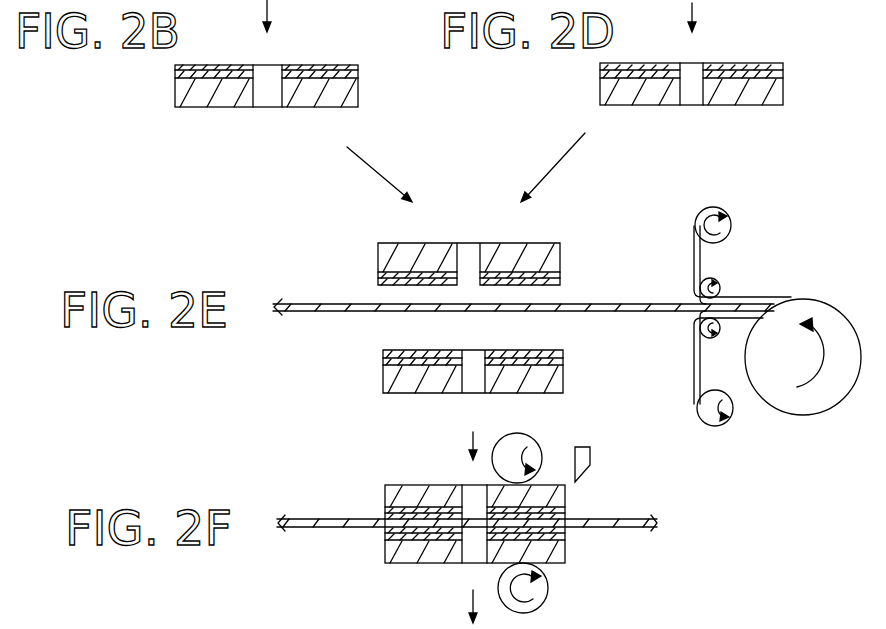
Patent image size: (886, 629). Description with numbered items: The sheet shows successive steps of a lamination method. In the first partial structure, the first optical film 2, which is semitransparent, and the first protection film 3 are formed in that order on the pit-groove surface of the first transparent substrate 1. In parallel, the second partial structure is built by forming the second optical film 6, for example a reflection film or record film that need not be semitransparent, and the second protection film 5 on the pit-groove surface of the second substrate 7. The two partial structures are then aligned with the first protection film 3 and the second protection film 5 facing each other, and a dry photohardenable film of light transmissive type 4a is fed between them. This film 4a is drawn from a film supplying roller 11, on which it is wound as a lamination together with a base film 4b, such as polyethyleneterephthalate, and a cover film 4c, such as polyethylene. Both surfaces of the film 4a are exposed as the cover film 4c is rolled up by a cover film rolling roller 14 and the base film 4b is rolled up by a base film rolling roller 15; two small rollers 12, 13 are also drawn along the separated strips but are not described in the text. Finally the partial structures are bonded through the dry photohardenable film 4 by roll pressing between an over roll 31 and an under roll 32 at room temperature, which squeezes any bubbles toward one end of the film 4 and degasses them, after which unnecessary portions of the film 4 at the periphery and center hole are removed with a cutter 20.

In FIG. 2E, the first transparent substrate 1 is at (384, 376).
In FIG. 2B, the first optical film 2 is at (358, 75).
In FIG. 2E, the first optical film 2 is at (384, 362).
In FIG. 2B, the first protection film 3 is at (358, 69).
In FIG. 2E, the first protection film 3 is at (384, 355).
In FIG. 2F, the dry photohardenable film 4 is at (308, 519).
In FIG. 2E, the dry photohardenable film of light transmissive type 4a is at (291, 302).
In FIG. 2E, the base film 4b is at (693, 371).
In FIG. 2E, the cover film 4c is at (693, 255).
In FIG. 2D, the second protection film 5 is at (783, 69).
In FIG. 2E, the second protection film 5 is at (379, 282).
In FIG. 2D, the second optical film 6 is at (783, 73).
In FIG. 2E, the second optical film 6 is at (379, 272).
In FIG. 2E, the second substrate 7 is at (379, 256).
In FIG. 2E, the film supplying roller 11 is at (810, 310).
In FIG. 2E, the guide roller 12 is at (720, 286).
In FIG. 2E, the guide roller 13 is at (715, 339).
In FIG. 2E, the cover film rolling roller 14 is at (731, 222).
In FIG. 2E, the base film rolling roller 15 is at (727, 418).
In FIG. 2F, the cutter 20 is at (592, 457).
In FIG. 2F, the over roll 31 is at (535, 448).
In FIG. 2F, the under roll 32 is at (548, 588).